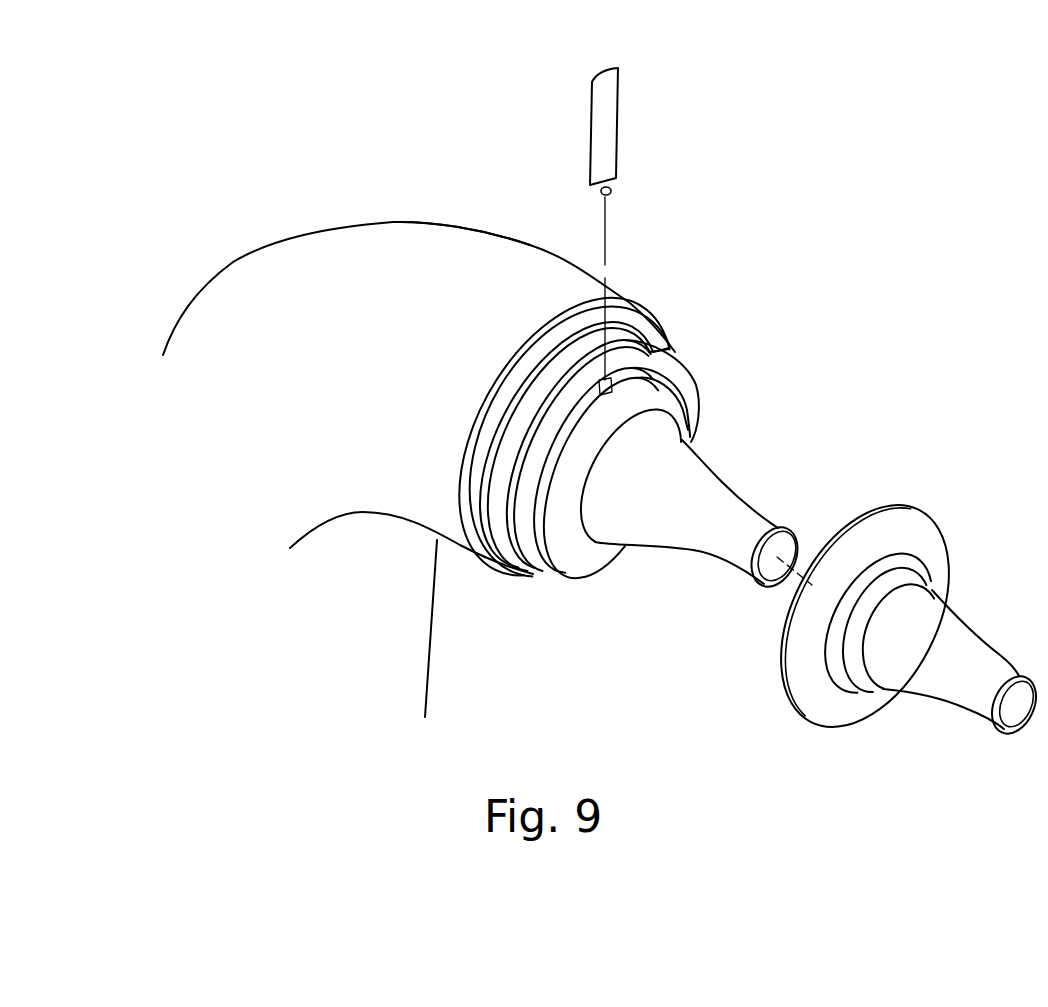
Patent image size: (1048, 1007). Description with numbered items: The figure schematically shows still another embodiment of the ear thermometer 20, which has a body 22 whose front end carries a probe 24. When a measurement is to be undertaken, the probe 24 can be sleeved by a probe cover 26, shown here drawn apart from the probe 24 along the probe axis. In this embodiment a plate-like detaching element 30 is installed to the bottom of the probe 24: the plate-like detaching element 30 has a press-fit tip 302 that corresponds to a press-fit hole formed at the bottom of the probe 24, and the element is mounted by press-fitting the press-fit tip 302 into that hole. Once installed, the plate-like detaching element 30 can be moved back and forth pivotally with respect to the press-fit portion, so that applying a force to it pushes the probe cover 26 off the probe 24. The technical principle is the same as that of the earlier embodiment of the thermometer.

The ear thermometer 20 is at (272, 195).
The body 22 is at (422, 258).
The probe 24 is at (690, 530).
The probe cover 26 is at (933, 678).
The plate-like detaching element 30 is at (648, 97).
The press-fit tip 302 is at (613, 187).